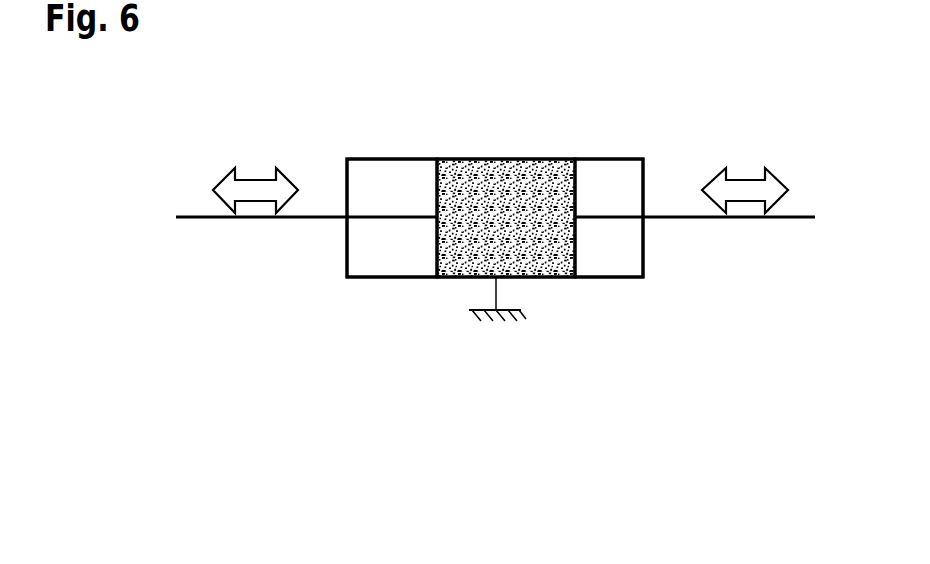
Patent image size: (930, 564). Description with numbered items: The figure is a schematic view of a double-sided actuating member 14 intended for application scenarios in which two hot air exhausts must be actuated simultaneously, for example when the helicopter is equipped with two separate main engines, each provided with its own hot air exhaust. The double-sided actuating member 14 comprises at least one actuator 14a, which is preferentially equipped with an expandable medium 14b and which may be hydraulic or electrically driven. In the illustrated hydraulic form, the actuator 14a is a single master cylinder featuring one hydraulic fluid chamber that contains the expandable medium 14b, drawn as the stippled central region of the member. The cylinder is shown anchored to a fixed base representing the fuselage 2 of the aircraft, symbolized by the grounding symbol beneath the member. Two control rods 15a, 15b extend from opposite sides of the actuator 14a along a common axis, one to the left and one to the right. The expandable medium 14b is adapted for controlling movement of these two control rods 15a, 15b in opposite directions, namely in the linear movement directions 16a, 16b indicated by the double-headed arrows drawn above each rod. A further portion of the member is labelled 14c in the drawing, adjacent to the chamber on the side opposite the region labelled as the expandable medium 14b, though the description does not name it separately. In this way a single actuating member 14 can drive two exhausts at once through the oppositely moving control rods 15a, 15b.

The fuselage 2 is at (490, 317).
The double-sided actuating member 14 is at (500, 205).
The actuator 14a is at (532, 158).
The expandable medium 14b is at (437, 190).
The electrode 14c is at (575, 190).
The control rod 15a is at (250, 218).
The control rod 15b is at (757, 221).
The linear movement direction 16a is at (250, 180).
The linear movement direction 16b is at (745, 180).